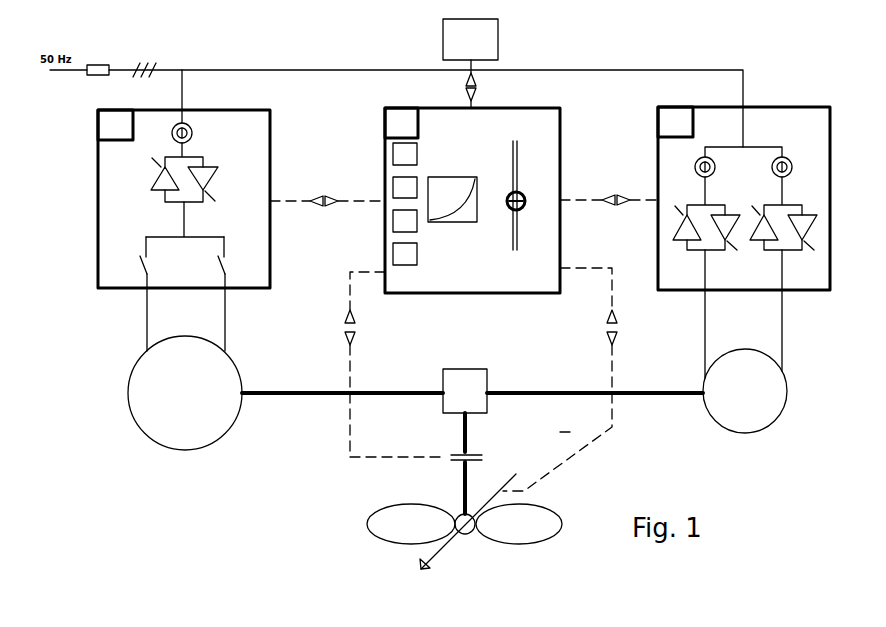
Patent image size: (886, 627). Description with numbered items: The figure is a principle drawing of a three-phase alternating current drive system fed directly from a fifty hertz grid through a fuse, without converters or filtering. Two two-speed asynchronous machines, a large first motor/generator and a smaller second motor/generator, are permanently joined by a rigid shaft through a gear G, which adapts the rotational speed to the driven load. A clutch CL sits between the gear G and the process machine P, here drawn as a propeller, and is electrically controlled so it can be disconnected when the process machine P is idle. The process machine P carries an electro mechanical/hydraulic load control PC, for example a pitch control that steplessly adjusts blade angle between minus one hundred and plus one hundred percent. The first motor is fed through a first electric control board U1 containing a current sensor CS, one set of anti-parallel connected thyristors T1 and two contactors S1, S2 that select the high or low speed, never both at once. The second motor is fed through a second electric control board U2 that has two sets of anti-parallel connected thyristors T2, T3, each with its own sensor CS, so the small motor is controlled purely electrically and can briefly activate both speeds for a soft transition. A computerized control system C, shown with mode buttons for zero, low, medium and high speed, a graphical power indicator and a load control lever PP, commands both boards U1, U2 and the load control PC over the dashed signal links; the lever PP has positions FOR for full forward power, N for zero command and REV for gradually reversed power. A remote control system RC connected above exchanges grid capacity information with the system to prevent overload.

The remote control system RC is at (470, 63).
The first electric control board U1 is at (184, 199).
The second electric control board U2 is at (744, 198).
The control system C is at (472, 200).
The sensor CS is at (192, 133).
The set of 3-phase anti-parallel connected thyristors T1 is at (184, 172).
The set of 3-phase anti-parallel connected thyristors T2 is at (706, 213).
The set of 3-phase anti-parallel connected thyristors T3 is at (783, 213).
The electric contactor S1 is at (135, 256).
The electric contactor S2 is at (209, 256).
The gear G is at (465, 391).
The clutch CL is at (451, 458).
The process machine P is at (464, 535).
The load control PC is at (475, 512).
The load control lever PP is at (530, 201).
The neutral position N is at (498, 202).
The forward position FOR is at (530, 141).
The reverse position REV is at (530, 250).